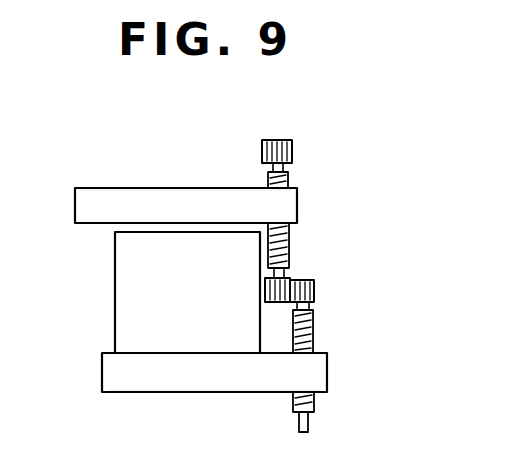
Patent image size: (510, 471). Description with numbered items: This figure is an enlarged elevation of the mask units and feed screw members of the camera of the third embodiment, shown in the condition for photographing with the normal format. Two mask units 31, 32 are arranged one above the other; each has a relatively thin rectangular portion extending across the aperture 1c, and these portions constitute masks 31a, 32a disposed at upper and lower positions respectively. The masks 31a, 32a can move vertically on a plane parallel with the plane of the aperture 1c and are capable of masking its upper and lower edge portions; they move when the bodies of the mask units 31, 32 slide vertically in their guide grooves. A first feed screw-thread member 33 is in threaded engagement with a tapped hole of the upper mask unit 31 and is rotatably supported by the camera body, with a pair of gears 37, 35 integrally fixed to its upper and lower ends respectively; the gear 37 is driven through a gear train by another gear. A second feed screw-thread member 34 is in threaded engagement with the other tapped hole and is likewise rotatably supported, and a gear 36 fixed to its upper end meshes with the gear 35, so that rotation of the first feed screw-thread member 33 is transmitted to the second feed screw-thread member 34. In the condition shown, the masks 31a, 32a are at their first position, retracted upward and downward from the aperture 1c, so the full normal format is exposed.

The aperture 1c is at (140, 300).
The mask unit 31 is at (288, 197).
The mask 31a is at (150, 200).
The mask unit 32 is at (316, 380).
The mask 32a is at (197, 384).
The first feed screw-thread member 33 is at (292, 240).
The second feed screw-thread member 34 is at (313, 338).
The gear 35 is at (300, 280).
The gear 36 is at (314, 291).
The gear 37 is at (283, 142).